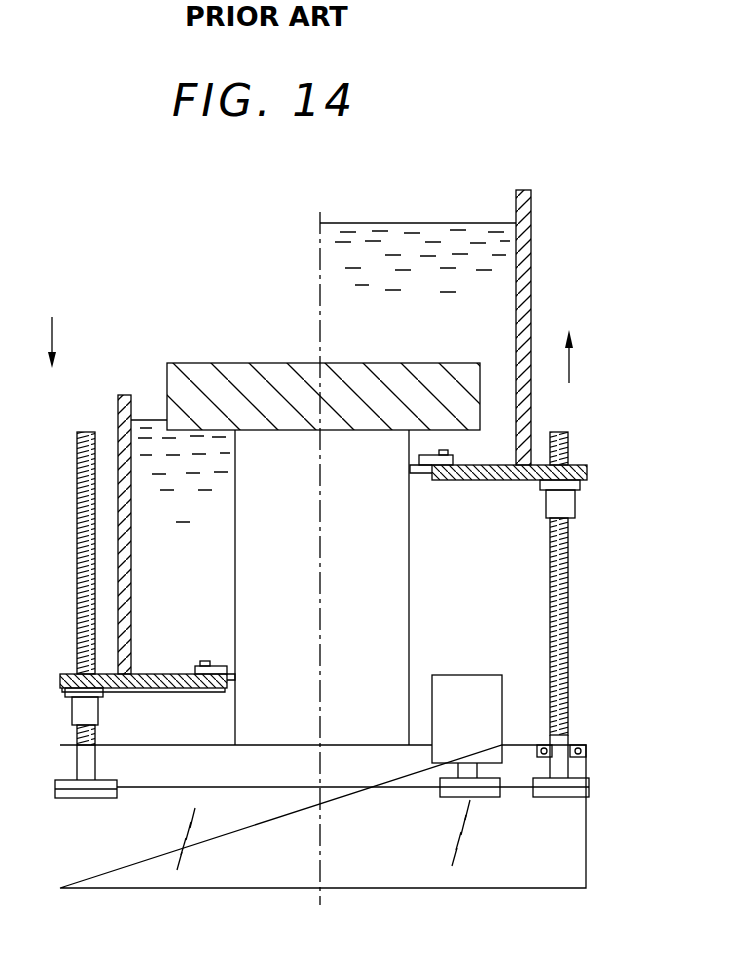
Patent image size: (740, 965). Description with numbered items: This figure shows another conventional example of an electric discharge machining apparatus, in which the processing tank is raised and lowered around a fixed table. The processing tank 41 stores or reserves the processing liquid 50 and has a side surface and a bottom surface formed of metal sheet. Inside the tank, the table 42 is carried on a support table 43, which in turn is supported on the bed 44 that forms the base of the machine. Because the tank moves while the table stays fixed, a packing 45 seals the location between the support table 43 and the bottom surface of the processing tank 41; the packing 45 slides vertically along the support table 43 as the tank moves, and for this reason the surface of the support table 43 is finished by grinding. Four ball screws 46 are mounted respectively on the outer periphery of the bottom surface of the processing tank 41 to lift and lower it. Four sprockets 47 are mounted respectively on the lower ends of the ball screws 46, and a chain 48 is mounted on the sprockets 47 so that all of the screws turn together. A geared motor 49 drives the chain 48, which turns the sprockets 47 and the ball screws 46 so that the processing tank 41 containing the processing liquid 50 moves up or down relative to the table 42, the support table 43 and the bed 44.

The processing tank 41 is at (522, 243).
The table 42 is at (417, 372).
The support table 43 is at (412, 596).
The bed 44 is at (425, 872).
The packing 45 is at (232, 668).
The ball screws 46 is at (77, 510).
The sprockets 47 is at (98, 798).
The chain 48 is at (516, 788).
The geared motor 49 is at (482, 685).
The processing liquid 50 is at (422, 228).